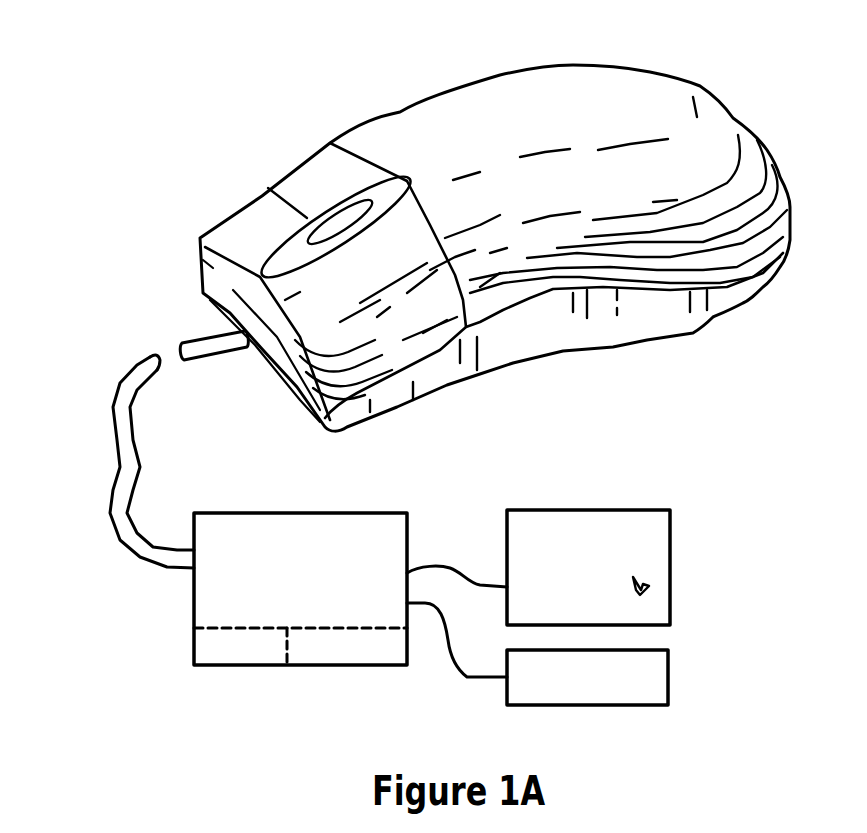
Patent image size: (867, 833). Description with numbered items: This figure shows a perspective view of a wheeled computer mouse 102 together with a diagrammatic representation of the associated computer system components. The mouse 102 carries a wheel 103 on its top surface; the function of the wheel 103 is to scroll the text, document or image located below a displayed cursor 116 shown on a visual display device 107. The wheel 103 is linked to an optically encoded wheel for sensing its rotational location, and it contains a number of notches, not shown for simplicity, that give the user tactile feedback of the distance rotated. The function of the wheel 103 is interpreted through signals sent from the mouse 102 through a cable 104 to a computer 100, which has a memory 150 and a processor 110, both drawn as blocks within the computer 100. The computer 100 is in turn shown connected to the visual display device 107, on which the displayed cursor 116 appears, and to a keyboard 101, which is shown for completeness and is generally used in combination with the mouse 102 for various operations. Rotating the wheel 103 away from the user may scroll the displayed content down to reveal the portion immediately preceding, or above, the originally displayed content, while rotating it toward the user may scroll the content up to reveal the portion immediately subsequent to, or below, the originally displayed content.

The computer 100 is at (207, 594).
The keyboard 101 is at (663, 667).
The mouse 102 is at (430, 93).
The wheel 103 is at (313, 220).
The cable 104 is at (118, 392).
The visual display device 107 is at (653, 518).
The processor 110 is at (360, 664).
The displayed cursor 116 is at (670, 583).
The memory 150 is at (193, 663).